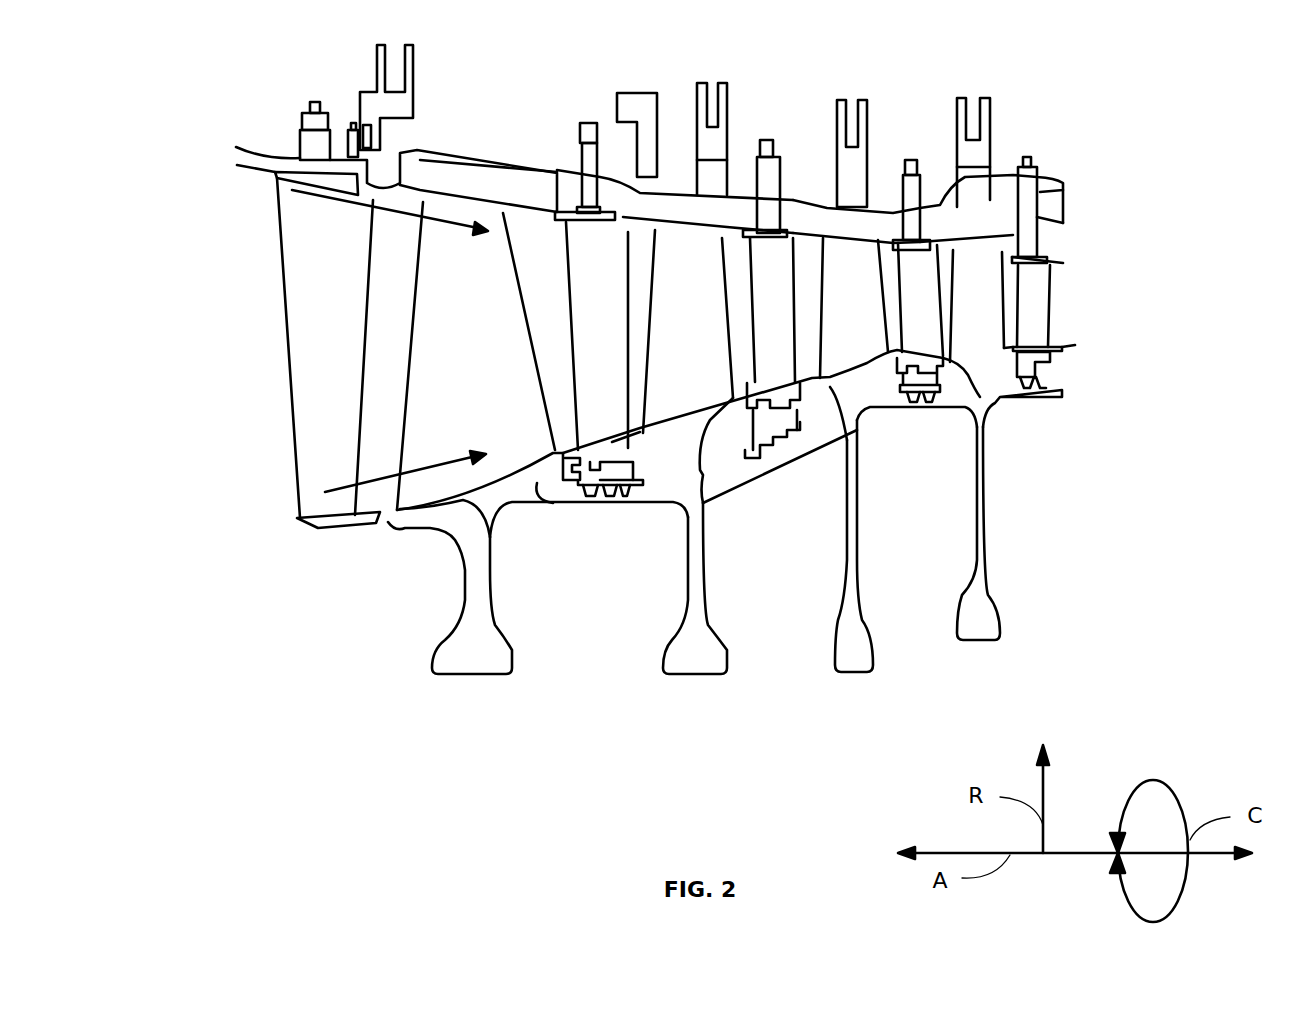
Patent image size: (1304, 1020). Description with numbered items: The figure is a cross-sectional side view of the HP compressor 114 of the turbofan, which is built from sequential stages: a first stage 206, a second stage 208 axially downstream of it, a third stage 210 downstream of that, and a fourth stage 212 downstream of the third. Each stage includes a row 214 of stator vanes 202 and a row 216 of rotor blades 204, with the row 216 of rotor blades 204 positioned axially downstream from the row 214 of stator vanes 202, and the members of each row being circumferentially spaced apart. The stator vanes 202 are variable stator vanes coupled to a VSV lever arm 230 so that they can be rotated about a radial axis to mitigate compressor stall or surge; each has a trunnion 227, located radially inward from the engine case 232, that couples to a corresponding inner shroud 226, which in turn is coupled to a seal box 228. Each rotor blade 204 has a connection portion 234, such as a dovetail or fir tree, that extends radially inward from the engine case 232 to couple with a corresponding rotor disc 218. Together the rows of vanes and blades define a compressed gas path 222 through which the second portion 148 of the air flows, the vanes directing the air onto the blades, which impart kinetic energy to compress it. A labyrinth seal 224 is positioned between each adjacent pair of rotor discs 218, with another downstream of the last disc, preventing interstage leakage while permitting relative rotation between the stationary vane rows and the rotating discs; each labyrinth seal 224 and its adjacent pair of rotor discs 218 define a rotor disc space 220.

The HP compressor 114 is at (127, 119).
The second portion of the air 148 is at (418, 470).
The stator vanes 202 is at (704, 293).
The rotor blades 204 is at (659, 356).
The first stage 206 is at (436, 142).
The second stage 208 is at (673, 160).
The third stage 210 is at (809, 168).
The fourth stage 212 is at (946, 180).
The row of stator vanes 214 is at (288, 278).
The row of rotor blades 216 is at (418, 265).
The rotor disc 218 is at (490, 620).
The rotor disc space 220 is at (729, 547).
The compressed gas path 222 is at (305, 200).
The labyrinth seal 224 is at (640, 505).
The inner shroud 226 is at (937, 357).
The trunnion 227 is at (573, 437).
The seal box 228 is at (633, 452).
The VSV lever arm 230 is at (357, 118).
The engine case 232 is at (1062, 183).
The connection portion 234 is at (465, 502).